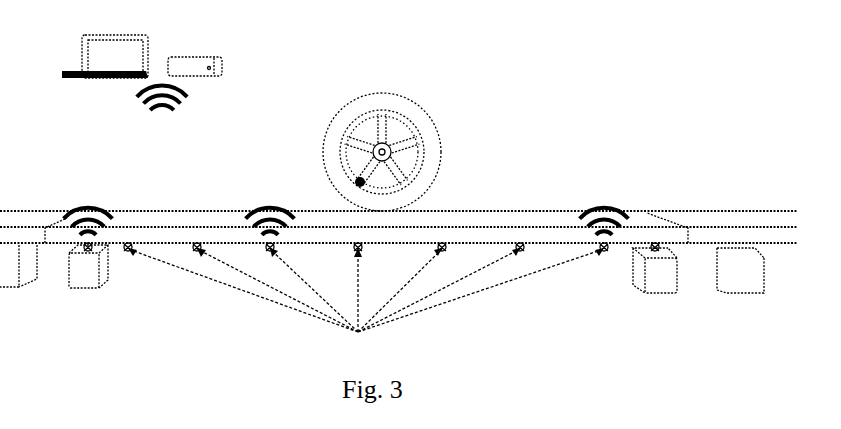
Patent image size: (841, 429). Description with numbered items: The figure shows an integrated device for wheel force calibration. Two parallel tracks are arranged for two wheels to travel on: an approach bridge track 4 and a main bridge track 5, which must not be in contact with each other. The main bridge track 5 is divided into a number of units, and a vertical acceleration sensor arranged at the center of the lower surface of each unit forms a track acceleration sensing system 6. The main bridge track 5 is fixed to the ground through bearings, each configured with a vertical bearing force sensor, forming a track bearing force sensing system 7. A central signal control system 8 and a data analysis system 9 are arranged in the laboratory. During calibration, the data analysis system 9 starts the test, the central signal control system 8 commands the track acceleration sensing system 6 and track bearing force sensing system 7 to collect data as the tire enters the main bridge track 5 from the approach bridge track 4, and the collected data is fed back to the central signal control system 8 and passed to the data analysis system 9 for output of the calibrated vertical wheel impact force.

The approach bridge track 4 is at (52, 218).
The main bridge track 5 is at (165, 216).
The track acceleration sensing system 6 is at (358, 333).
The track bearing force sensing system 7 is at (92, 251).
The central signal control system 8 is at (189, 62).
The data analysis system 9 is at (121, 62).